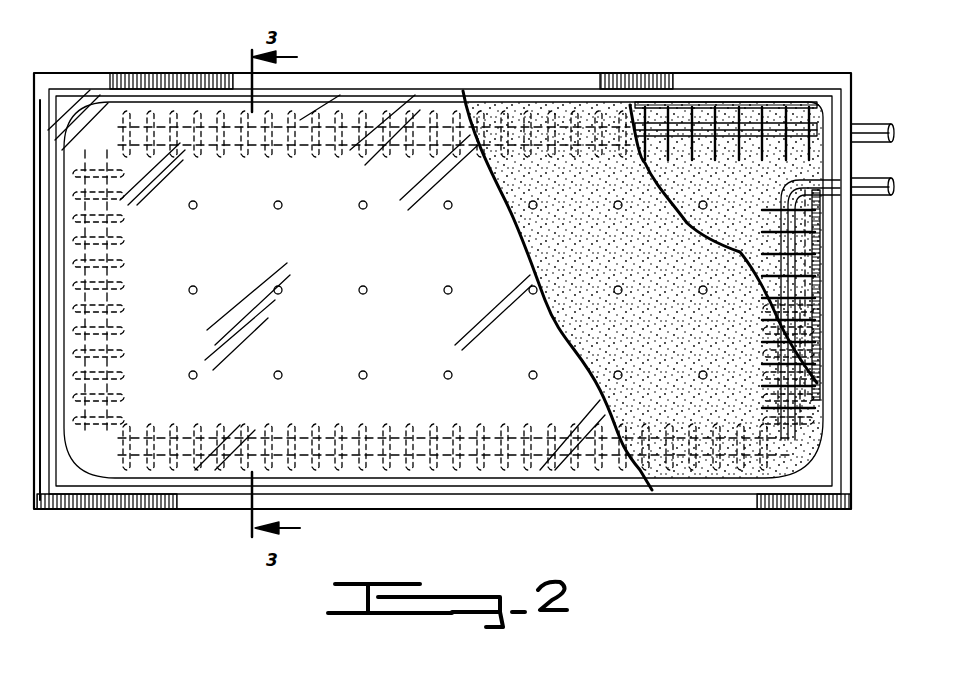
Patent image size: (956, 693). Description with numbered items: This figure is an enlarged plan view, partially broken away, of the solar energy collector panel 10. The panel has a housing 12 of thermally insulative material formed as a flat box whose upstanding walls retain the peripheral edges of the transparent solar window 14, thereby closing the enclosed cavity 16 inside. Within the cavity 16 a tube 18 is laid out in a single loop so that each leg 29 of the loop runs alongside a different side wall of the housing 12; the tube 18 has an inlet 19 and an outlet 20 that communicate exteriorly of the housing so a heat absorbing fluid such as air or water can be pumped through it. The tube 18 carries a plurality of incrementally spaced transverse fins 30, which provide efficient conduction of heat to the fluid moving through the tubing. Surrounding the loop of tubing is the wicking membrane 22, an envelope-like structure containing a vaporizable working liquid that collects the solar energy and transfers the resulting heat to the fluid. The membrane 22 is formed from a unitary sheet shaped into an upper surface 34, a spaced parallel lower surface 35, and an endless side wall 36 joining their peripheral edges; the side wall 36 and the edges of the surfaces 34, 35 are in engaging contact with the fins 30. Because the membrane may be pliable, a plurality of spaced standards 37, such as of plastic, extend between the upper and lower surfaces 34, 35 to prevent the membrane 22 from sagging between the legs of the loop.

The solar energy collector panel 10 is at (679, 55).
The housing 12 is at (578, 88).
The solar window 14 is at (468, 102).
The enclosed cavity 16 is at (602, 103).
The tube 18 is at (727, 127).
The inlet 19 is at (881, 124).
The outlet 20 is at (866, 195).
The wicking membrane 22 is at (643, 185).
The leg 29 is at (370, 118).
The transverse fins 30 is at (778, 105).
The upper surface 34 is at (808, 312).
The lower surface 35 is at (812, 338).
The endless side wall 36 is at (705, 103).
The standards 37 is at (195, 210).